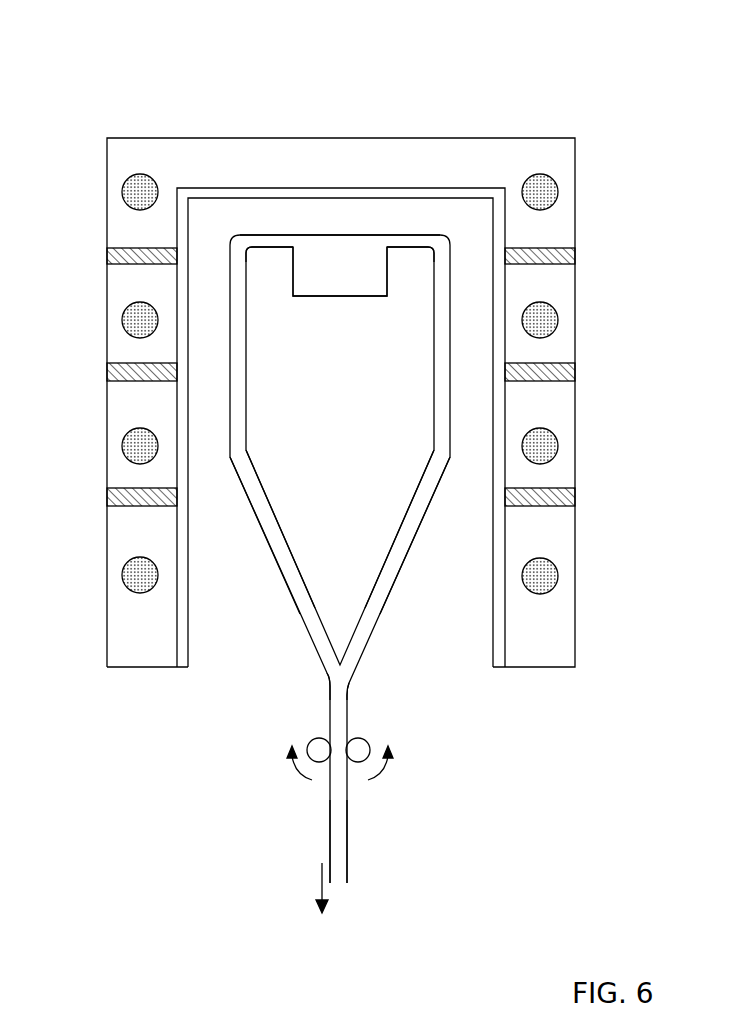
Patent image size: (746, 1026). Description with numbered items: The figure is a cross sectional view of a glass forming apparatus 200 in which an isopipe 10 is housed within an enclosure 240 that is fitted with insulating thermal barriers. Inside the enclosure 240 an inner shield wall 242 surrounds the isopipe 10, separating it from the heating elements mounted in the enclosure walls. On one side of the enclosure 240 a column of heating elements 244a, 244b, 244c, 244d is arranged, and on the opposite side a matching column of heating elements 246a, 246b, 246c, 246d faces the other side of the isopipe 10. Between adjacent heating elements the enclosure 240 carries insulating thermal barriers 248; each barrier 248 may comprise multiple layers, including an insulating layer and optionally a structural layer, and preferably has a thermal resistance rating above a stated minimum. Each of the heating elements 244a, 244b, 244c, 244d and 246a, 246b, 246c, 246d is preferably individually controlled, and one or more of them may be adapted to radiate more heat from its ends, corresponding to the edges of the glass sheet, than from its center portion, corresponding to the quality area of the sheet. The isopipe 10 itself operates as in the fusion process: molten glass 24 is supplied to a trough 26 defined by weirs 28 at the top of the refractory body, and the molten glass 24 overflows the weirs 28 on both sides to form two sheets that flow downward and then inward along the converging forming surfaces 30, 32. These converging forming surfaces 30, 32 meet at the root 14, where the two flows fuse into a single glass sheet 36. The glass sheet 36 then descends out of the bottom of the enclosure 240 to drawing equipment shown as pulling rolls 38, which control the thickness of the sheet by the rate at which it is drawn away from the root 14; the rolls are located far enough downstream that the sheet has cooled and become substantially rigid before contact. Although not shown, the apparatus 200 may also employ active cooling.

The apparatus 200 is at (214, 90).
The enclosure 240 is at (463, 132).
The inner shield wall 242 is at (188, 627).
The heating element 244a is at (540, 593).
The heating element 244b is at (548, 432).
The heating element 244c is at (558, 312).
The heating element 244d is at (542, 174).
The heating element 246a is at (141, 593).
The heating element 246b is at (128, 438).
The heating element 246c is at (124, 312).
The heating element 246d is at (140, 174).
The insulating thermal barrier 248 is at (127, 248).
The isopipe 10 is at (357, 399).
The molten glass 24 is at (363, 235).
The trough 26 is at (373, 296).
The weirs 28 is at (275, 247).
The converging forming surface 30 is at (406, 517).
The converging forming surface 32 is at (272, 517).
The root 14 is at (350, 680).
The glass sheet 36 is at (347, 812).
The pulling rolls 38 is at (307, 748).